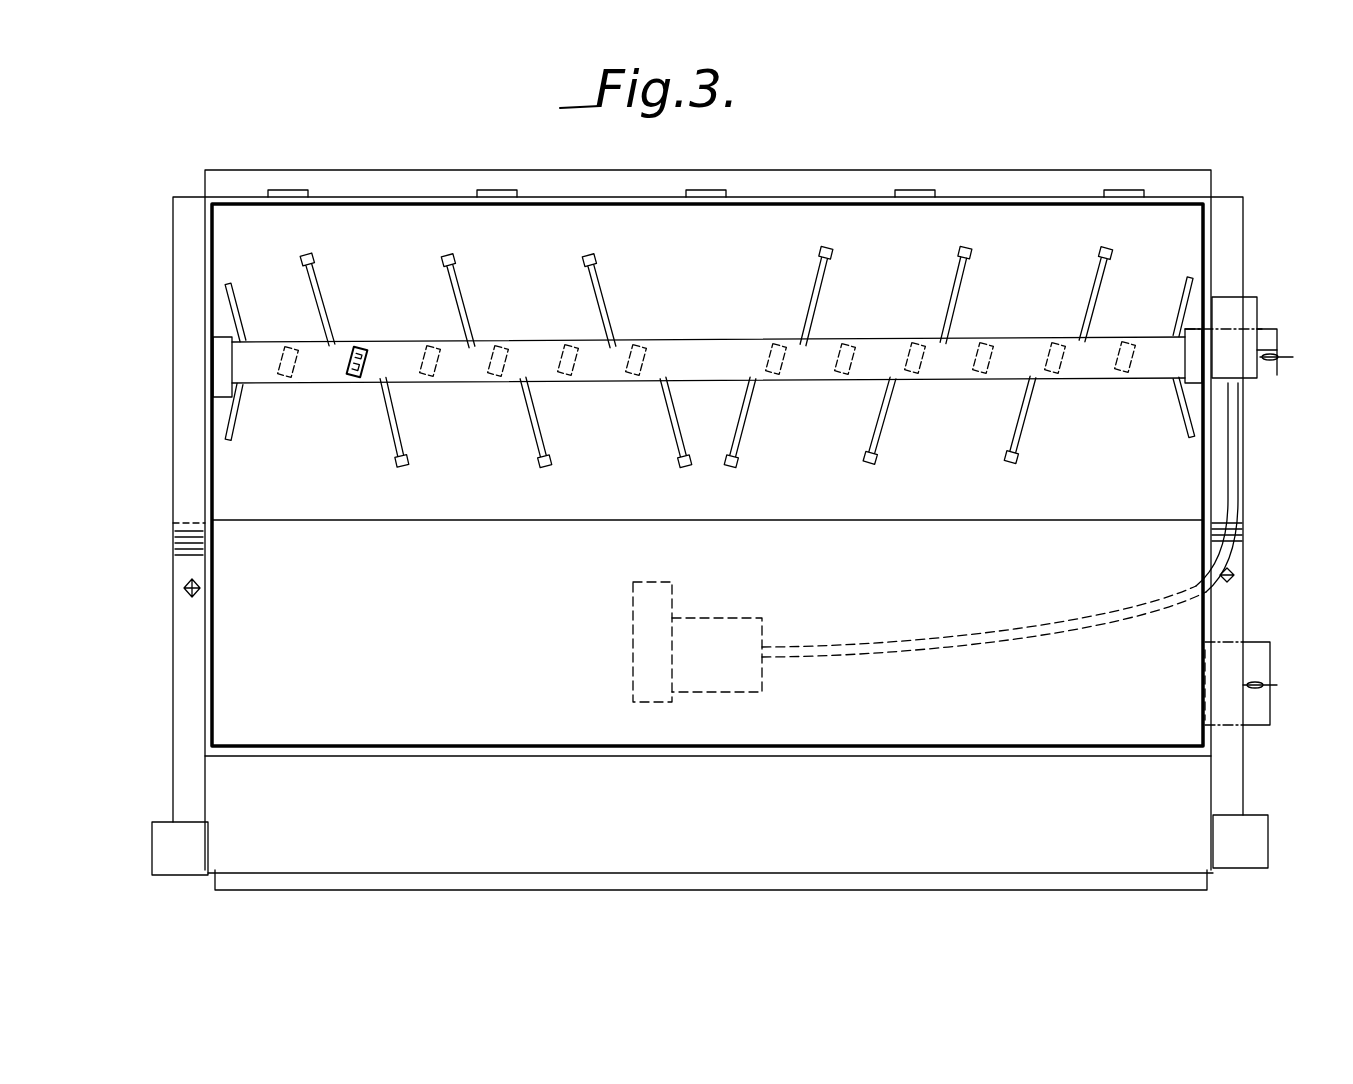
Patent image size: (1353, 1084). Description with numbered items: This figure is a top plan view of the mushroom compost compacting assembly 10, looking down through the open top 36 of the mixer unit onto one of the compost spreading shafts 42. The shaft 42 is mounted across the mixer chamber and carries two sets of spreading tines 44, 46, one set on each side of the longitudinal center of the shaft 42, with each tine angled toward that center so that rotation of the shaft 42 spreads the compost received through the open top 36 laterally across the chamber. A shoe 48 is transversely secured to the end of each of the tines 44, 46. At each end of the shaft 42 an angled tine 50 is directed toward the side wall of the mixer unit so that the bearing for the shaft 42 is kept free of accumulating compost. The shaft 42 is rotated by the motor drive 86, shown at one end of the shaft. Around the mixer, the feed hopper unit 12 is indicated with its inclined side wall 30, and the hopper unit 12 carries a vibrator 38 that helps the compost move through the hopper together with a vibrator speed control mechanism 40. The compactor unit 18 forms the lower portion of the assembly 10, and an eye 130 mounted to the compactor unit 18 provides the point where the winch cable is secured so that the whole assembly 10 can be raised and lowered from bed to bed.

The mushroom compost compacting assembly 10 is at (195, 142).
The feed hopper unit 12 is at (207, 243).
The compactor unit 18 is at (227, 793).
The inclined side wall 30 is at (258, 655).
The top of mixer unit 36 is at (385, 235).
The vibrator 38 is at (712, 665).
The vibrator speed control mechanism 40 is at (1232, 313).
The shaft 42 is at (802, 365).
The spreading tine 44 is at (815, 300).
The spreading tine 46 is at (602, 300).
The shoe 48 is at (848, 340).
The end angled tine 50 is at (222, 300).
The motor drive 86 is at (1263, 373).
The eye 130 is at (184, 588).